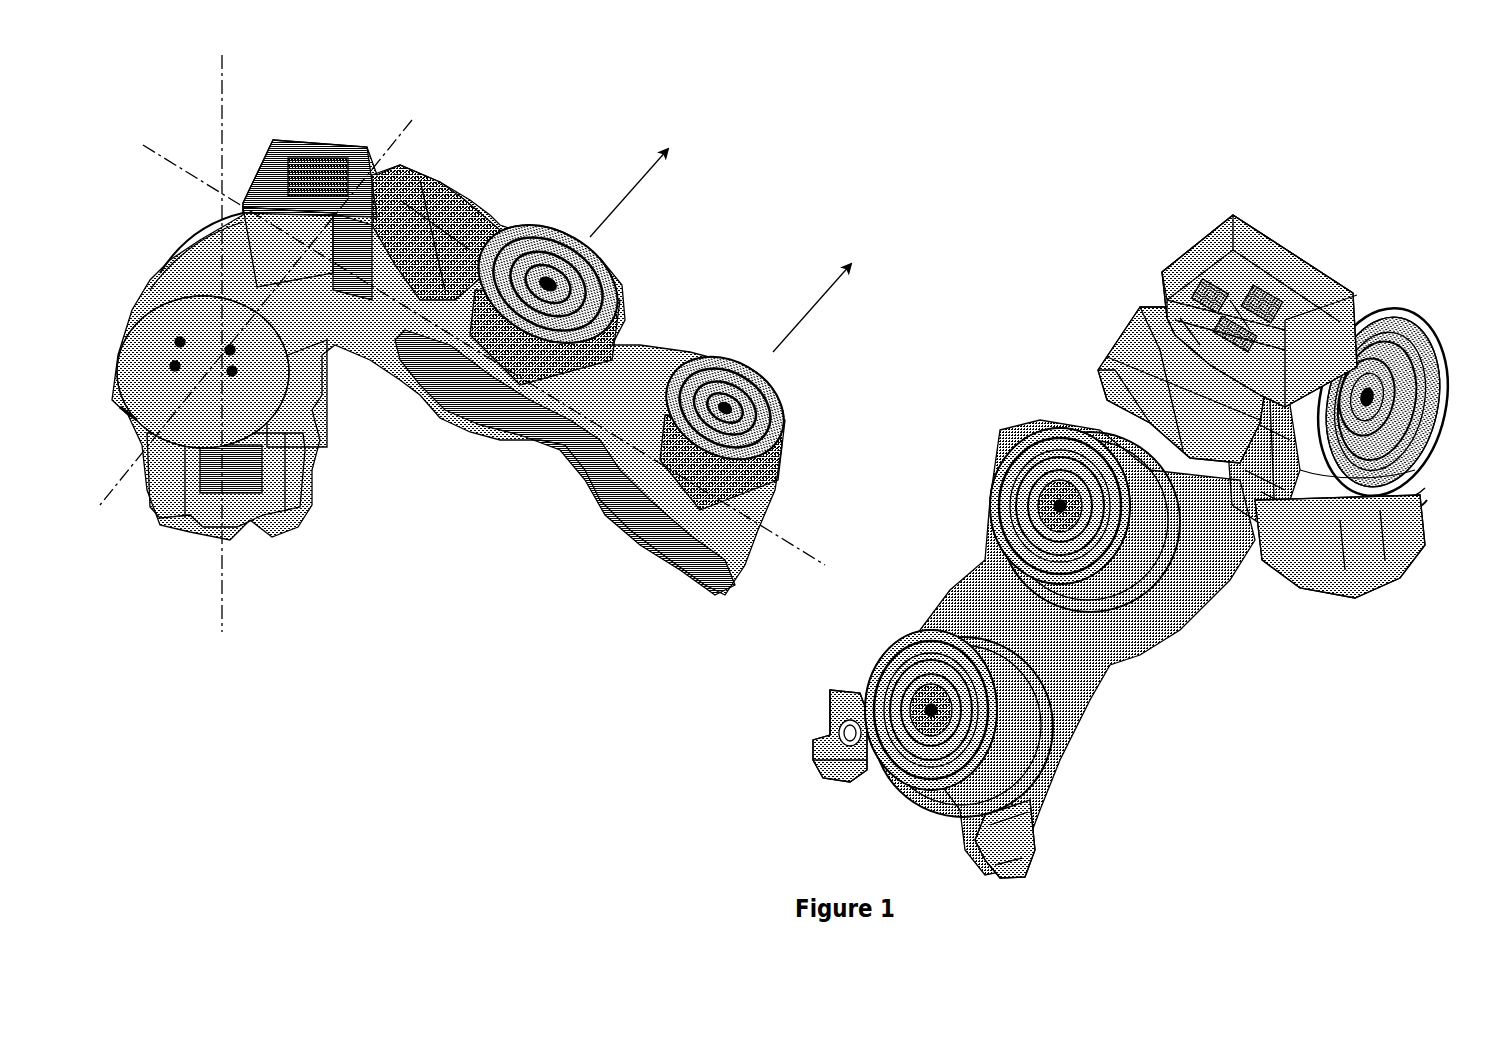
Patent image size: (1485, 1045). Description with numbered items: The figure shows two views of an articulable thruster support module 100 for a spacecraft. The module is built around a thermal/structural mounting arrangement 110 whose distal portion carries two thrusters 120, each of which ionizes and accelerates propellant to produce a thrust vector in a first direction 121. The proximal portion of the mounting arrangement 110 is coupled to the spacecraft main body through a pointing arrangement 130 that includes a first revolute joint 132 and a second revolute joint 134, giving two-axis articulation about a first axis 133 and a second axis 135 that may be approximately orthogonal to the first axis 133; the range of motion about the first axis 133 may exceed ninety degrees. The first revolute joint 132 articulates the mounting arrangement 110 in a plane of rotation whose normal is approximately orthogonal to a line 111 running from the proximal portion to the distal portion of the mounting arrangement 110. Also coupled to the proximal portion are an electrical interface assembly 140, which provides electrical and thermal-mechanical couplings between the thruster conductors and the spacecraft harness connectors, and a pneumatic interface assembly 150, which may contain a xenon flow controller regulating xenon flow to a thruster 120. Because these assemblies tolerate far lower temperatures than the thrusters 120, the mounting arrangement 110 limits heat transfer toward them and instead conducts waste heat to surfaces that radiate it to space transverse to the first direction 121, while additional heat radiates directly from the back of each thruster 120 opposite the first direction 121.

The articulable thruster support module 100 is at (512, 140).
The thermal/structural mounting arrangement 110 is at (622, 527).
The line 111 is at (167, 170).
The thruster 120 is at (693, 365).
The first direction 121 is at (650, 176).
The pointing arrangement 130 is at (372, 481).
The first revolute joint 132 is at (277, 380).
The first axis 133 is at (118, 480).
The second revolute joint 134 is at (282, 480).
The second axis 135 is at (225, 600).
The electrical interface assembly 140 is at (427, 217).
The pneumatic interface assembly 150 is at (322, 173).